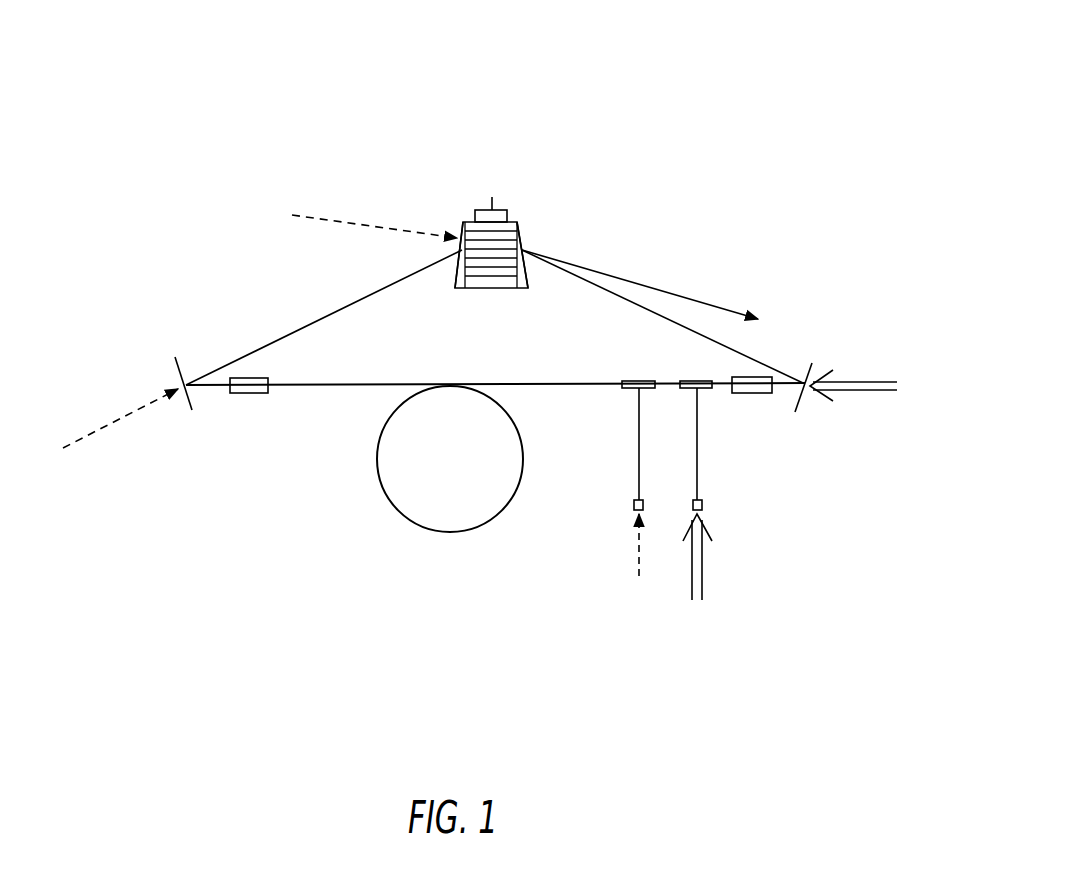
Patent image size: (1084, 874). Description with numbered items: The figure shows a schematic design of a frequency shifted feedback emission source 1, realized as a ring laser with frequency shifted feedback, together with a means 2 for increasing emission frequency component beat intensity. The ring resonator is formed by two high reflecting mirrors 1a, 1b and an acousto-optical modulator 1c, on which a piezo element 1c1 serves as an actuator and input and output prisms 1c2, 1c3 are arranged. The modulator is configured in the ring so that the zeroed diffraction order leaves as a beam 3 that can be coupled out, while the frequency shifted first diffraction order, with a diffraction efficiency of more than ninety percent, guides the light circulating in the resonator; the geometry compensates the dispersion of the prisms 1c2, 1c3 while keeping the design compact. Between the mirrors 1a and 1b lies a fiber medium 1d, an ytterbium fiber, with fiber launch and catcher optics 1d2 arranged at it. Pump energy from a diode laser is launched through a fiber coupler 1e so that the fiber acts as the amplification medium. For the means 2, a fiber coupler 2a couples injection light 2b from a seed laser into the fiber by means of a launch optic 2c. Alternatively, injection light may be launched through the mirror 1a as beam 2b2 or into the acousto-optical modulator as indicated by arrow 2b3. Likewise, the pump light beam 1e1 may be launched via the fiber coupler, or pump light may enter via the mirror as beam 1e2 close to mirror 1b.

The frequency shifted feedback emission source 1 is at (555, 98).
The means for increasing emission frequency component beat intensity 2 is at (506, 636).
The beam 3 is at (687, 295).
The high reflecting mirror 1a is at (190, 406).
The high reflecting mirror 1b is at (812, 370).
The acousto-optical modulator 1c is at (533, 238).
The piezo element 1c1 is at (490, 216).
The input prism 1c2 is at (450, 280).
The output prism 1c3 is at (525, 284).
The fiber medium 1d is at (386, 497).
The fiber launch and catcher optics 1d2 is at (250, 390).
The fiber coupler 1e is at (700, 440).
The pump light beam 1e1 is at (703, 572).
The pump light beam 1e2 is at (868, 394).
The fiber coupler 2a is at (622, 389).
The injection light 2b is at (638, 580).
The injection light beam 2b2 is at (97, 428).
The arrow 2b3 is at (308, 212).
The launch optic 2c is at (633, 503).